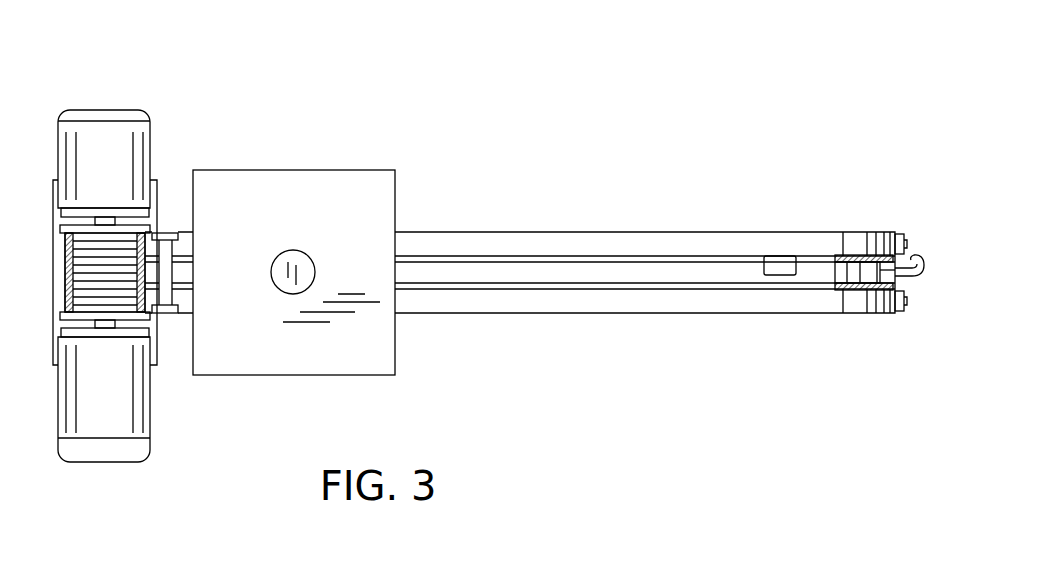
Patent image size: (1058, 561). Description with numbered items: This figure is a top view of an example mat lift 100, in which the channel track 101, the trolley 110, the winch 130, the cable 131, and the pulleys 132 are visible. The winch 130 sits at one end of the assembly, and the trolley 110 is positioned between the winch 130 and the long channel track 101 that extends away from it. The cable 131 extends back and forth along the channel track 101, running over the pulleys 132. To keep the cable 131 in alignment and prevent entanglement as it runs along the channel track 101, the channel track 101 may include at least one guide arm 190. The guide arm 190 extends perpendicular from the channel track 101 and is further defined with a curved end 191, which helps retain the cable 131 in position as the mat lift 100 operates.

The mat lift 100 is at (748, 97).
The channel track 101 is at (637, 232).
The trolley 110 is at (193, 158).
The winch 130 is at (60, 313).
The cable 131 is at (468, 256).
The pulleys 132 is at (843, 272).
The guide arm 190 is at (919, 302).
The curved end 191 is at (920, 240).